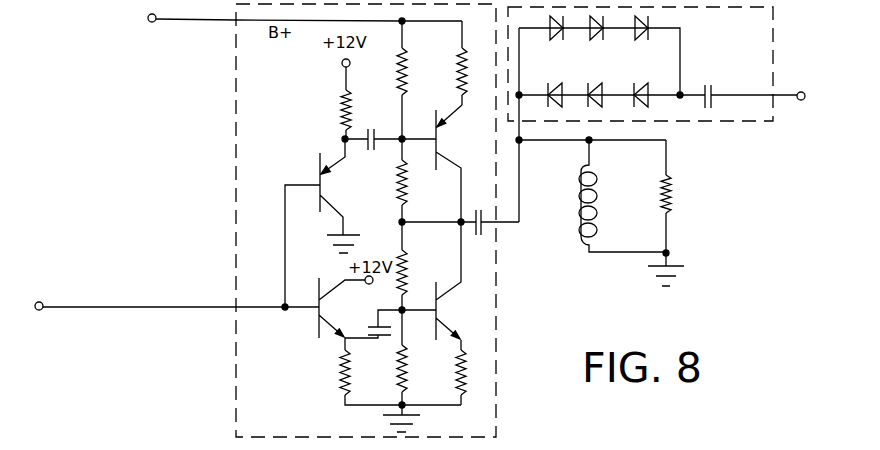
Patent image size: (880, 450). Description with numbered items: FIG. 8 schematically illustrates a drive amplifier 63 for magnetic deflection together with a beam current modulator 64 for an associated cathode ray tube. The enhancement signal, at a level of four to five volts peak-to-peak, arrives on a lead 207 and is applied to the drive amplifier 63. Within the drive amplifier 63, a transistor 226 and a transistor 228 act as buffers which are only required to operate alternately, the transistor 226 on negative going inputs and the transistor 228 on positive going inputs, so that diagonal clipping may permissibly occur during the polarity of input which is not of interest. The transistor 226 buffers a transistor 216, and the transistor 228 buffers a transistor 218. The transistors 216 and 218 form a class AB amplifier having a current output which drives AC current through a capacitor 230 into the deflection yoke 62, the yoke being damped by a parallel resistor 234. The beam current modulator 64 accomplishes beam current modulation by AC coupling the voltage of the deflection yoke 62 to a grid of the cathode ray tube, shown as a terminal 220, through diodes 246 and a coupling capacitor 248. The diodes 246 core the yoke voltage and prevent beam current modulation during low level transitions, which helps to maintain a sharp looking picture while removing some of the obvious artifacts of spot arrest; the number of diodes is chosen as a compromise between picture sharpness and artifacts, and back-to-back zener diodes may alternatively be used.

The lead 207 is at (100, 305).
The drive amplifier 63 is at (226, 395).
The transistor 226 is at (326, 186).
The transistor 228 is at (315, 315).
The transistor 216 is at (433, 127).
The transistor 218 is at (441, 312).
The capacitor 230 is at (485, 228).
The deflection yoke 62 is at (597, 200).
The parallel resistor 234 is at (672, 197).
The beam current modulator 64 is at (730, 130).
The diodes 246 is at (681, 42).
The coupling capacitor 248 is at (708, 84).
The output terminal G1 220 is at (795, 108).